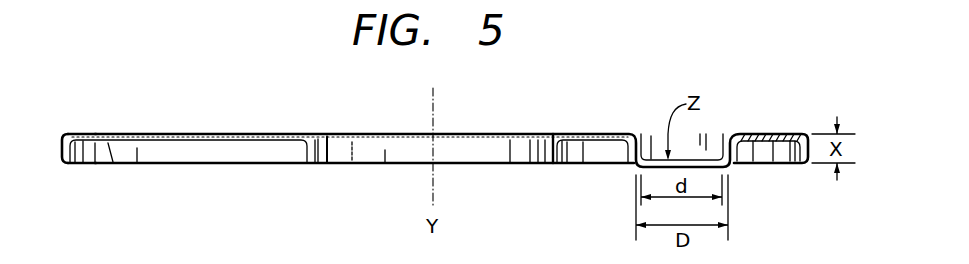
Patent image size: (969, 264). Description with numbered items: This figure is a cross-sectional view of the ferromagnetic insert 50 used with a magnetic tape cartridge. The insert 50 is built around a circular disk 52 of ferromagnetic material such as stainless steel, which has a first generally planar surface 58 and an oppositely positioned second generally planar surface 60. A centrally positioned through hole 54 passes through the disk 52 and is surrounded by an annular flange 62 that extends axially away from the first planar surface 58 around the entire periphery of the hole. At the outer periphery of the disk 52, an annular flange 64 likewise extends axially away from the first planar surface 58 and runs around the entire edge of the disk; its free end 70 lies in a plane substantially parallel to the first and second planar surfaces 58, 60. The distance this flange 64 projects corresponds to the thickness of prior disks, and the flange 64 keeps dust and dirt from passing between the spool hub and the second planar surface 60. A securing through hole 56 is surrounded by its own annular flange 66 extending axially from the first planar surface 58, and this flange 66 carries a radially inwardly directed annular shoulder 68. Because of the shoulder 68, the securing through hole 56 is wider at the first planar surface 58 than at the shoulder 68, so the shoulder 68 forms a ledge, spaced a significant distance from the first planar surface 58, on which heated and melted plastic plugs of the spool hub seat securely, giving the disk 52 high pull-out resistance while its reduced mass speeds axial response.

The insert 50 is at (790, 128).
The circular disk 52 is at (87, 134).
The centrally positioned through hole 54 is at (555, 133).
The securing through hole 56 is at (635, 131).
The first generally planar surface 58 is at (178, 138).
The second generally planar surface 60 is at (113, 147).
The annular flange 62 is at (545, 164).
The annular flange 64 is at (60, 156).
The annular flange 66 is at (725, 133).
The radially inwardly directed annular shoulder 68 is at (644, 134).
The free end 70 is at (67, 166).